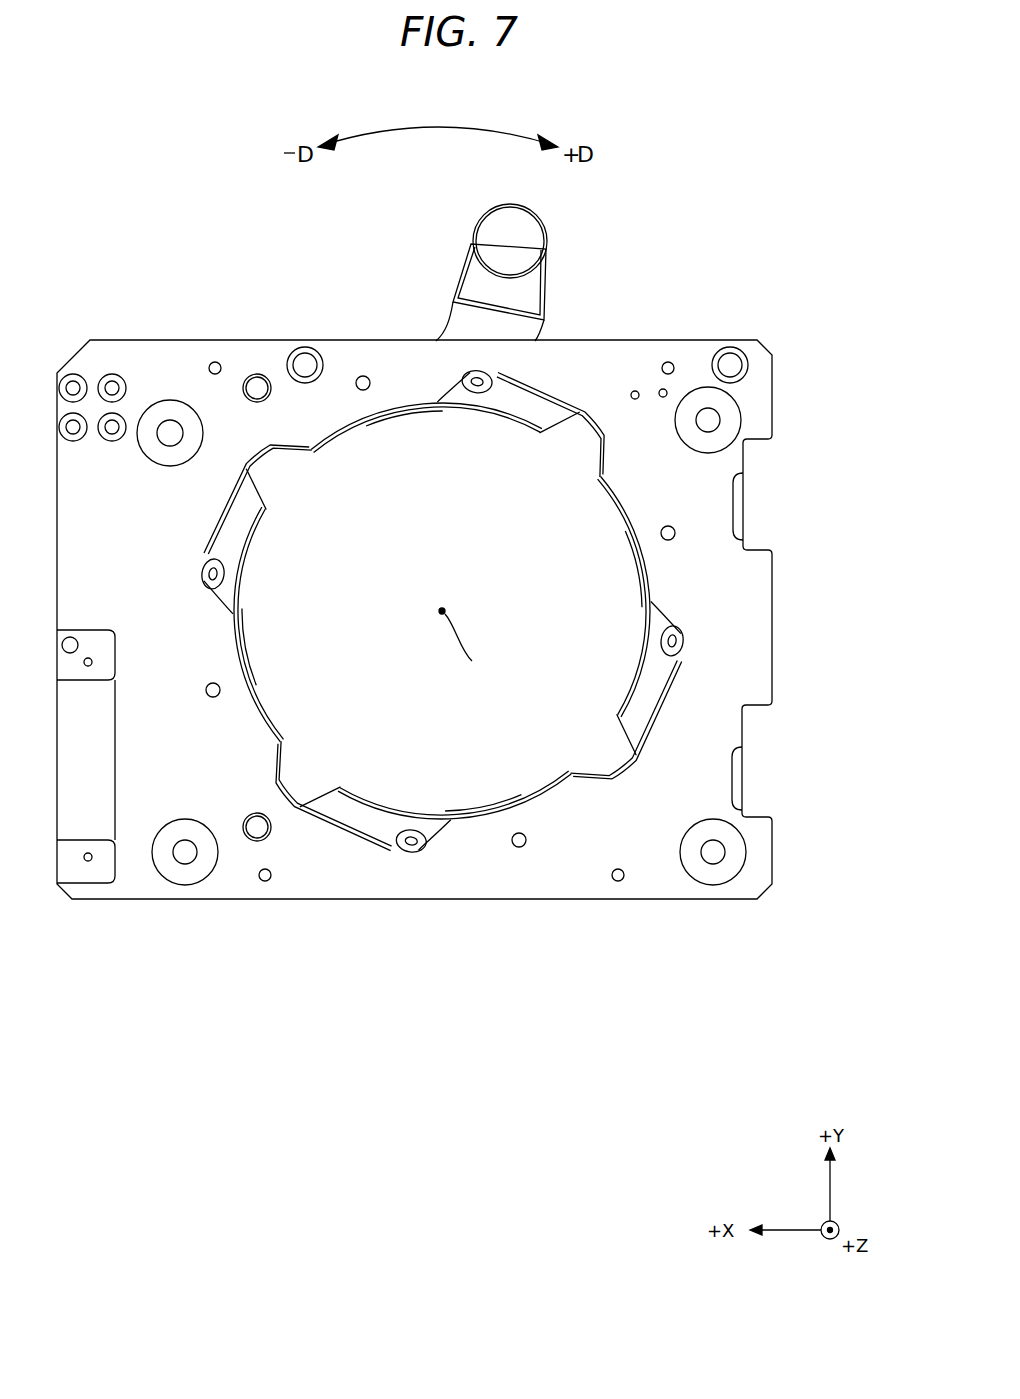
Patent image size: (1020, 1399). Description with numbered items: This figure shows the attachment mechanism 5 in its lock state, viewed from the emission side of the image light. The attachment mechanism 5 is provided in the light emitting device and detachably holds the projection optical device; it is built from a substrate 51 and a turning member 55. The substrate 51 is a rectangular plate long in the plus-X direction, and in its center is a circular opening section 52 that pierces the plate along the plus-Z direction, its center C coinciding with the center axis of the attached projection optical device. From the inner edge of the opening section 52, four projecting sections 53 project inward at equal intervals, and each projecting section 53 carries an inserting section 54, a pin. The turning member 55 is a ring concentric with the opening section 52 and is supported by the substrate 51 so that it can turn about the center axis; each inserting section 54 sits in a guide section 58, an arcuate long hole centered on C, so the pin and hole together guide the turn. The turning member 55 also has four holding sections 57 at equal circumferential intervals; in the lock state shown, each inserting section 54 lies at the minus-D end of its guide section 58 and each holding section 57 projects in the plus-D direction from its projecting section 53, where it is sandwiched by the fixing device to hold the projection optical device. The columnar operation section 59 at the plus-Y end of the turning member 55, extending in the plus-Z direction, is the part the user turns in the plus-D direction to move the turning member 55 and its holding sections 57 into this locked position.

The attachment mechanism 5 is at (758, 150).
The substrate 51 is at (710, 340).
The opening section 52 is at (660, 708).
The projecting section 53 is at (313, 432).
The inserting section 54 is at (365, 392).
The turning member 55 is at (445, 328).
The holding section 57 is at (536, 415).
The guide section 58 is at (470, 393).
The operation section 59 is at (548, 233).